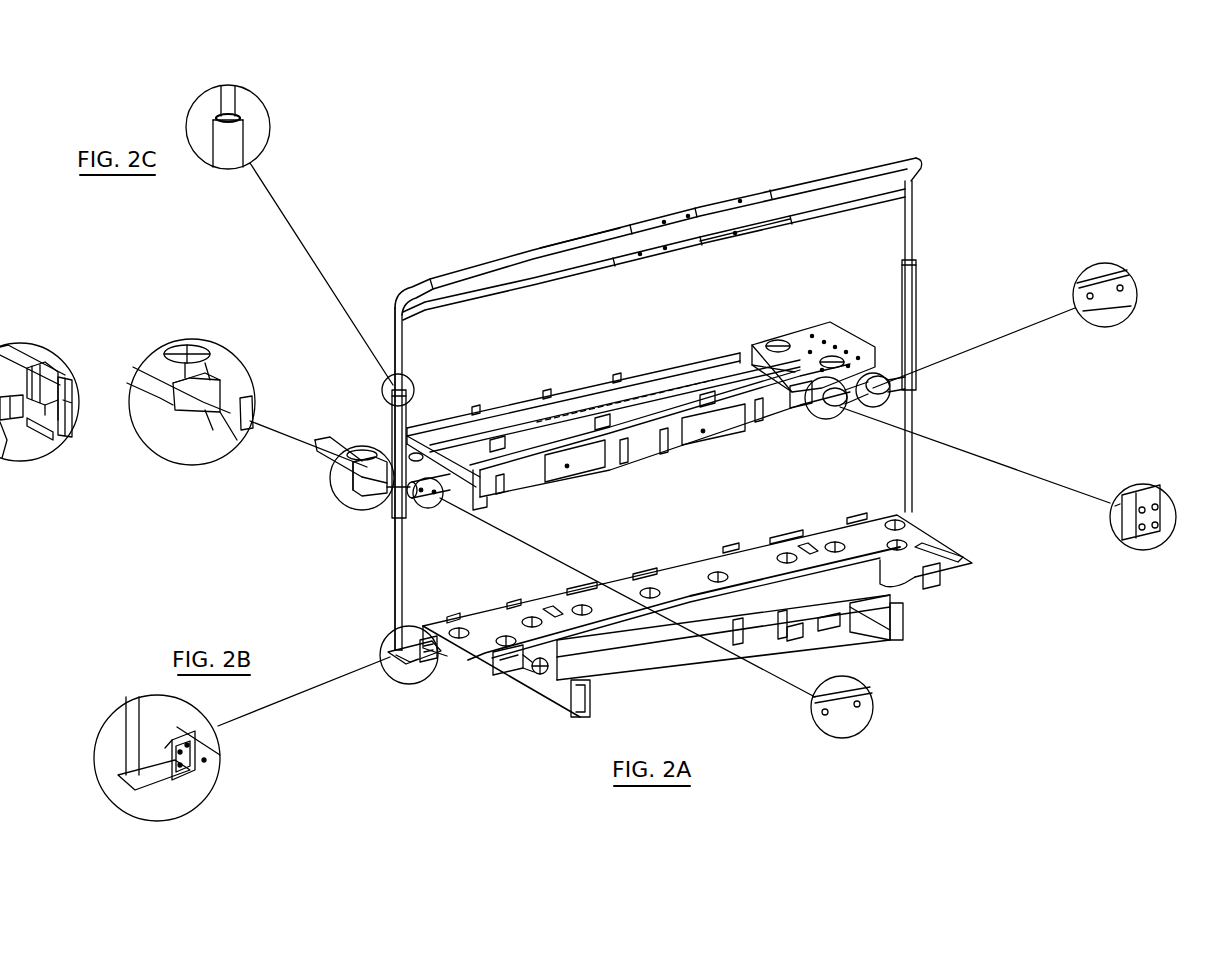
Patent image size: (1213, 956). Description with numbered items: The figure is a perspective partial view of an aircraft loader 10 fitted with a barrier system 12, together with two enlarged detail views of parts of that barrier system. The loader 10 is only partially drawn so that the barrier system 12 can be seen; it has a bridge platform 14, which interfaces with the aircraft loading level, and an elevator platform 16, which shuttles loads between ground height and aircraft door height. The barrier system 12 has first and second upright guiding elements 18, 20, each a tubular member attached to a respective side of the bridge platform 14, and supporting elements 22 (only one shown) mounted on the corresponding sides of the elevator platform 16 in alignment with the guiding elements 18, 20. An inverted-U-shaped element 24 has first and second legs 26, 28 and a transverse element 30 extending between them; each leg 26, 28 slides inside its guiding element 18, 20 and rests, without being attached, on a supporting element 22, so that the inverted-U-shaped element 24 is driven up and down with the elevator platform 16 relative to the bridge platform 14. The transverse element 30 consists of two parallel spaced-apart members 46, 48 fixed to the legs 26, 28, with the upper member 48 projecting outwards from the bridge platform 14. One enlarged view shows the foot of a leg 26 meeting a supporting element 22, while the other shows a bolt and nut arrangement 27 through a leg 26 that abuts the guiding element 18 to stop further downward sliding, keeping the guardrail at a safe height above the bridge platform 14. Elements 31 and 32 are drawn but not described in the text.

In FIG. 2A, the aircraft loader 10 is at (636, 116).
In FIG. 2A, the barrier system 12 is at (844, 160).
In FIG. 2A, the bridge platform 14 is at (813, 330).
In FIG. 2A, the elevator platform 16 is at (917, 600).
In FIG. 2A, the first upright guiding element 18 is at (388, 428).
In FIG. 2C, the first upright guiding element 18 is at (236, 148).
In FIG. 2A, the second upright guiding element 20 is at (914, 290).
In FIG. 2A, the supporting element 22 is at (413, 654).
In FIG. 2B, the supporting element 22 is at (160, 787).
In FIG. 2A, the inverted-U-shaped element 24 is at (516, 254).
In FIG. 2A, the first leg 26 is at (397, 588).
In FIG. 2B, the first leg 26 is at (132, 716).
In FIG. 2C, the first leg 26 is at (232, 98).
In FIG. 2C, the bolt and nut arrangement 27 is at (243, 114).
In FIG. 2A, the second leg 28 is at (910, 420).
In FIG. 2A, the transverse element 30 is at (740, 247).
In FIG. 2A, the bracket plate 31 is at (429, 655).
In FIG. 2A, the foot 32 is at (401, 660).
In FIG. 2A, the lower member 46 is at (540, 287).
In FIG. 2A, the upper member 48 is at (560, 244).